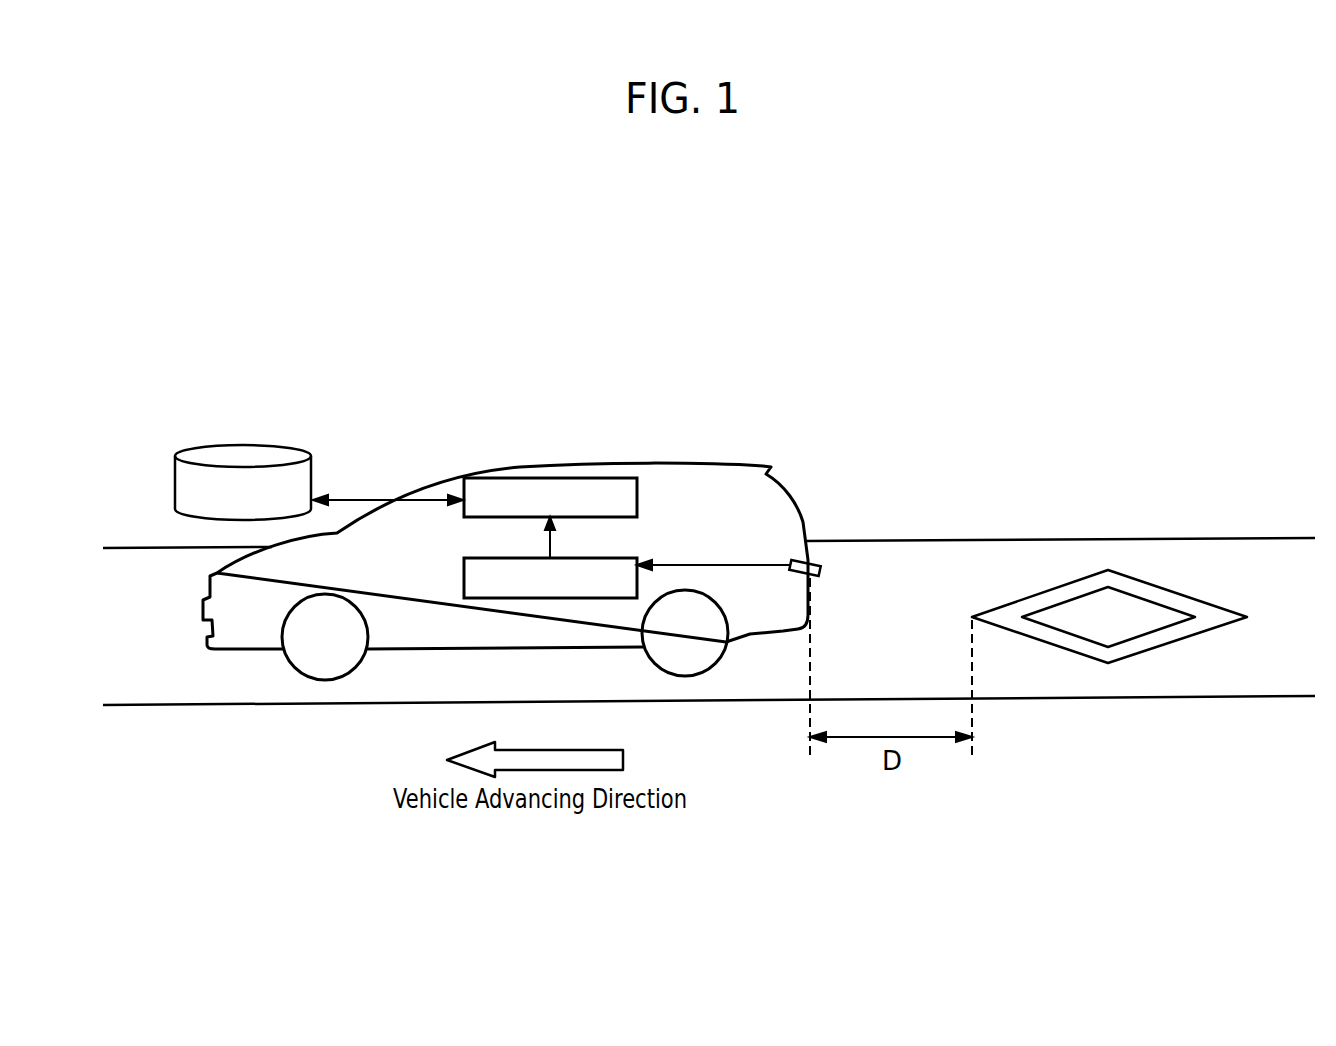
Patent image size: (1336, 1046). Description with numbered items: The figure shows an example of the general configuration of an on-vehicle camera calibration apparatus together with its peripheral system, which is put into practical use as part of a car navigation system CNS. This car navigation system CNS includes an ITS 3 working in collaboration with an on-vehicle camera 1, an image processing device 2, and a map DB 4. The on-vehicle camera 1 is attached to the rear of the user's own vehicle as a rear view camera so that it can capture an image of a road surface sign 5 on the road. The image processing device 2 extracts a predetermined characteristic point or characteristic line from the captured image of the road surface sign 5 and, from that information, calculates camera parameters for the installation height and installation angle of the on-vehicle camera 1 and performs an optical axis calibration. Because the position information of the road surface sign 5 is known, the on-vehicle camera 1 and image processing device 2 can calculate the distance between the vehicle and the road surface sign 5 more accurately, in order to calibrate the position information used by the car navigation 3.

The on-vehicle camera 1 is at (810, 560).
The image processing device 2 is at (635, 558).
The ITS (Intelligent Transporting System) 3 is at (591, 478).
The map DB 4 is at (283, 447).
The road surface sign 5 is at (1127, 573).
The car navigation system CNS is at (255, 408).